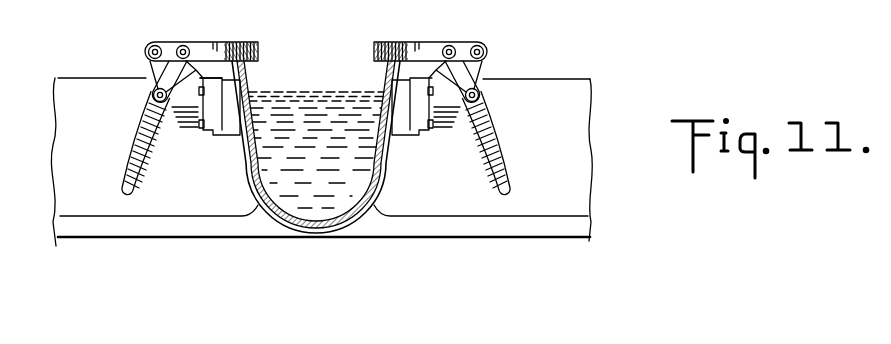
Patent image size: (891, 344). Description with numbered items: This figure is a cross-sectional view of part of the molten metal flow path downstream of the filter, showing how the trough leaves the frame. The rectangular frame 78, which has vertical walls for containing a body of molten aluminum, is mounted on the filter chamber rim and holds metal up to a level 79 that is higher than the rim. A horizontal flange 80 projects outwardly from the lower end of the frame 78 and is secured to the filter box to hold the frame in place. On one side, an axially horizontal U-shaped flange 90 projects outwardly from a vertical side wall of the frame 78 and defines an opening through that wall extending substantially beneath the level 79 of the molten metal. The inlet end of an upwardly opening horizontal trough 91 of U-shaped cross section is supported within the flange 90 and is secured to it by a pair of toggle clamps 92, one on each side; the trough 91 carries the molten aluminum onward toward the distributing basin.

The rectangular frame 78 is at (80, 92).
The level 79 is at (292, 90).
The horizontal flange 80 is at (461, 207).
The U-shaped flange 90 is at (393, 169).
The trough 91 is at (270, 193).
The toggle clamps 92 is at (168, 46).